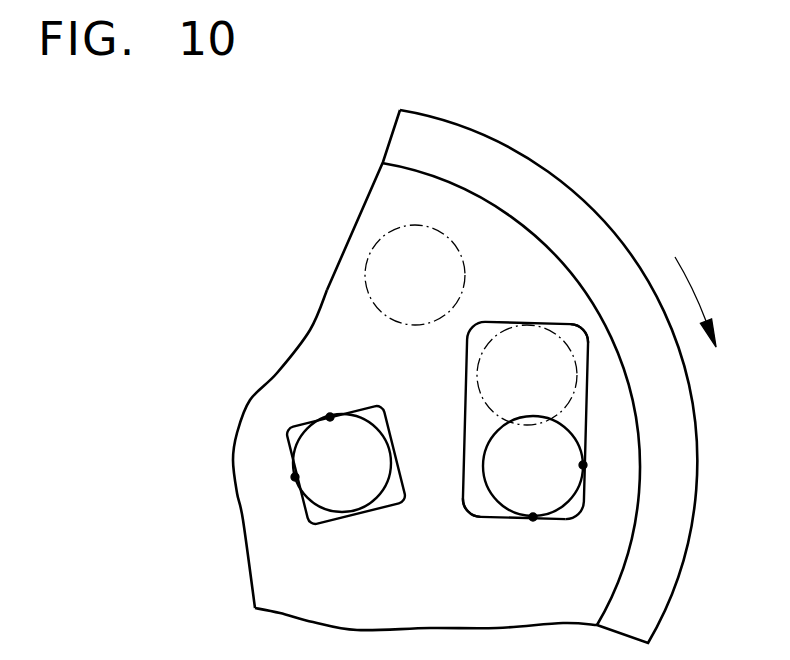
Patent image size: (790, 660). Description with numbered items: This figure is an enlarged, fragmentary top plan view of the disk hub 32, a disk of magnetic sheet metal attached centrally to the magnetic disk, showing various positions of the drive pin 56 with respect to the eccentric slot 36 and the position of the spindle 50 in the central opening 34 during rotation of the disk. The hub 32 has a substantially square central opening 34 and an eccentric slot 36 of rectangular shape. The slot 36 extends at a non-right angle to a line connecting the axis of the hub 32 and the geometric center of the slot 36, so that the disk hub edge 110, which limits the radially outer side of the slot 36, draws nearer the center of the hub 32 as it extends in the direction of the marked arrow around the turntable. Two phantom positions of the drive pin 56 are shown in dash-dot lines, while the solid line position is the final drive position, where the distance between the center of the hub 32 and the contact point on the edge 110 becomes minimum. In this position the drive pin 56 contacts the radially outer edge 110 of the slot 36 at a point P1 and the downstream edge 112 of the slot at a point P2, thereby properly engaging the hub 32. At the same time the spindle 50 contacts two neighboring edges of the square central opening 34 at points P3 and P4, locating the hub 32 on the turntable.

The hub 32 is at (317, 313).
The central opening 34 is at (308, 521).
The eccentric slot 36 is at (556, 331).
The spindle 50 is at (308, 493).
The drive pin 56 is at (368, 258).
The disk hub edge 110 is at (582, 433).
The downstream edge 112 is at (487, 513).
The point of contact P1 is at (585, 468).
The point of contact P2 is at (533, 519).
The point of contact P3 is at (330, 415).
The point of contact P4 is at (295, 476).